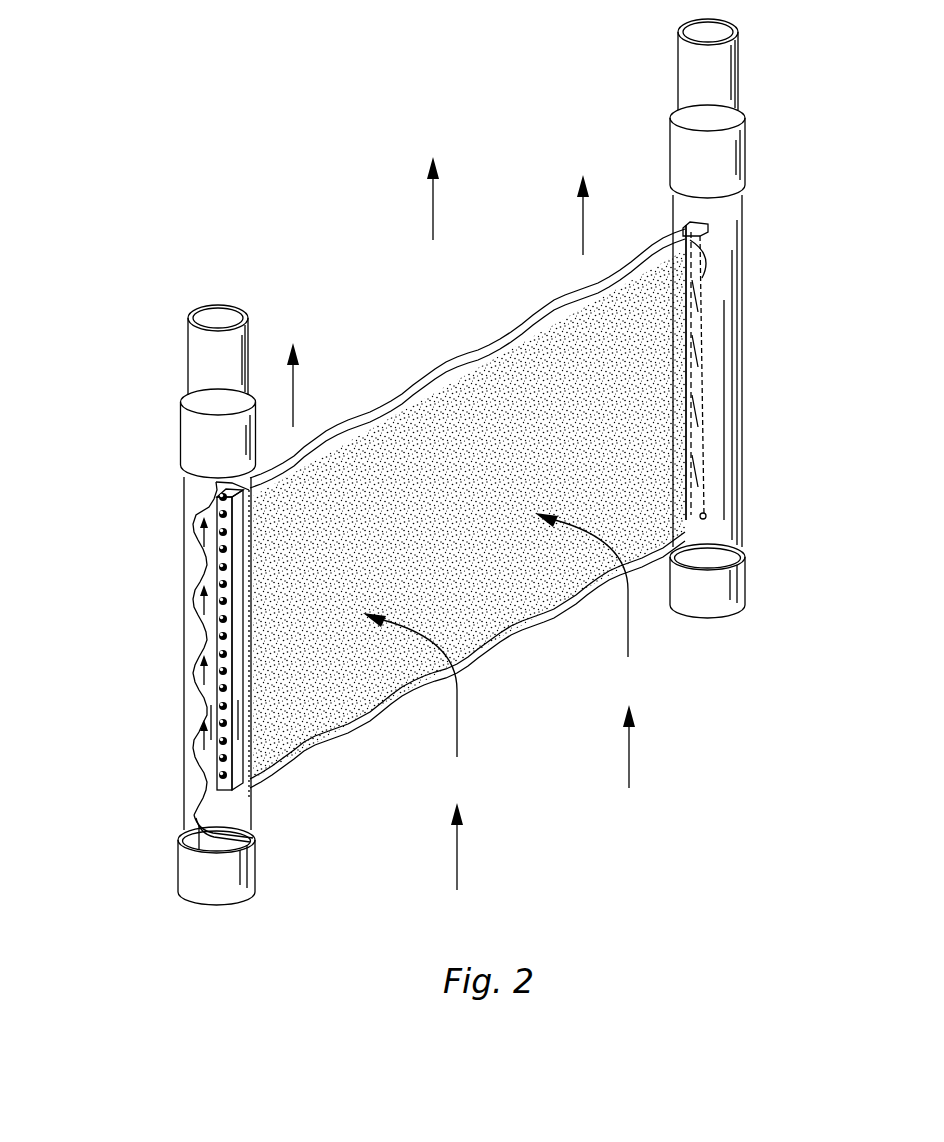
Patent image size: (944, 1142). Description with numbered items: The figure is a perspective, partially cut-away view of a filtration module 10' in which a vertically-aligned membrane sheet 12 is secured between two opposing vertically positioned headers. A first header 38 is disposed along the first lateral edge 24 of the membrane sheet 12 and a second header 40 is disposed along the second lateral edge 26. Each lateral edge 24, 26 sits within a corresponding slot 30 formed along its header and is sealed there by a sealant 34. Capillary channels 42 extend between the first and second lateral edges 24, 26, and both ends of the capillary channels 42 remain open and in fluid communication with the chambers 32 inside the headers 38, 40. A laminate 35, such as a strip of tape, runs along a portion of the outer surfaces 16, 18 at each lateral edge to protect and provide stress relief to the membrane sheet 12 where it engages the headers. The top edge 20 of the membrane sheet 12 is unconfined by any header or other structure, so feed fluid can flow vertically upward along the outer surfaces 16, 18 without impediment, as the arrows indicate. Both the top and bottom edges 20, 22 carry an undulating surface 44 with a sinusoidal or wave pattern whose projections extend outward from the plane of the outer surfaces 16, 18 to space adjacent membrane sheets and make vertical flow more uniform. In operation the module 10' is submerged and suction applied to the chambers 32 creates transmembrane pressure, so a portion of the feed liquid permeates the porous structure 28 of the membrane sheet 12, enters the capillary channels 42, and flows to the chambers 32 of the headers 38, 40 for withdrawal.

The filtration module 10' is at (747, 762).
The membrane sheet 12 is at (660, 373).
The outer surface 16 is at (510, 396).
The outer surface 18 is at (352, 400).
The top edge 20 is at (604, 280).
The bottom edge 22 is at (520, 627).
The first lateral edge 24 is at (237, 683).
The second lateral edge 26 is at (708, 298).
The porous structure 28 is at (640, 500).
The slot 30 is at (690, 278).
The chamber 32 is at (253, 833).
The sealant 34 is at (703, 520).
The laminate 35 is at (197, 807).
The first header 38 is at (187, 362).
The second header 40 is at (738, 82).
The capillary channels 42 is at (220, 550).
The undulating surface 44 is at (577, 287).